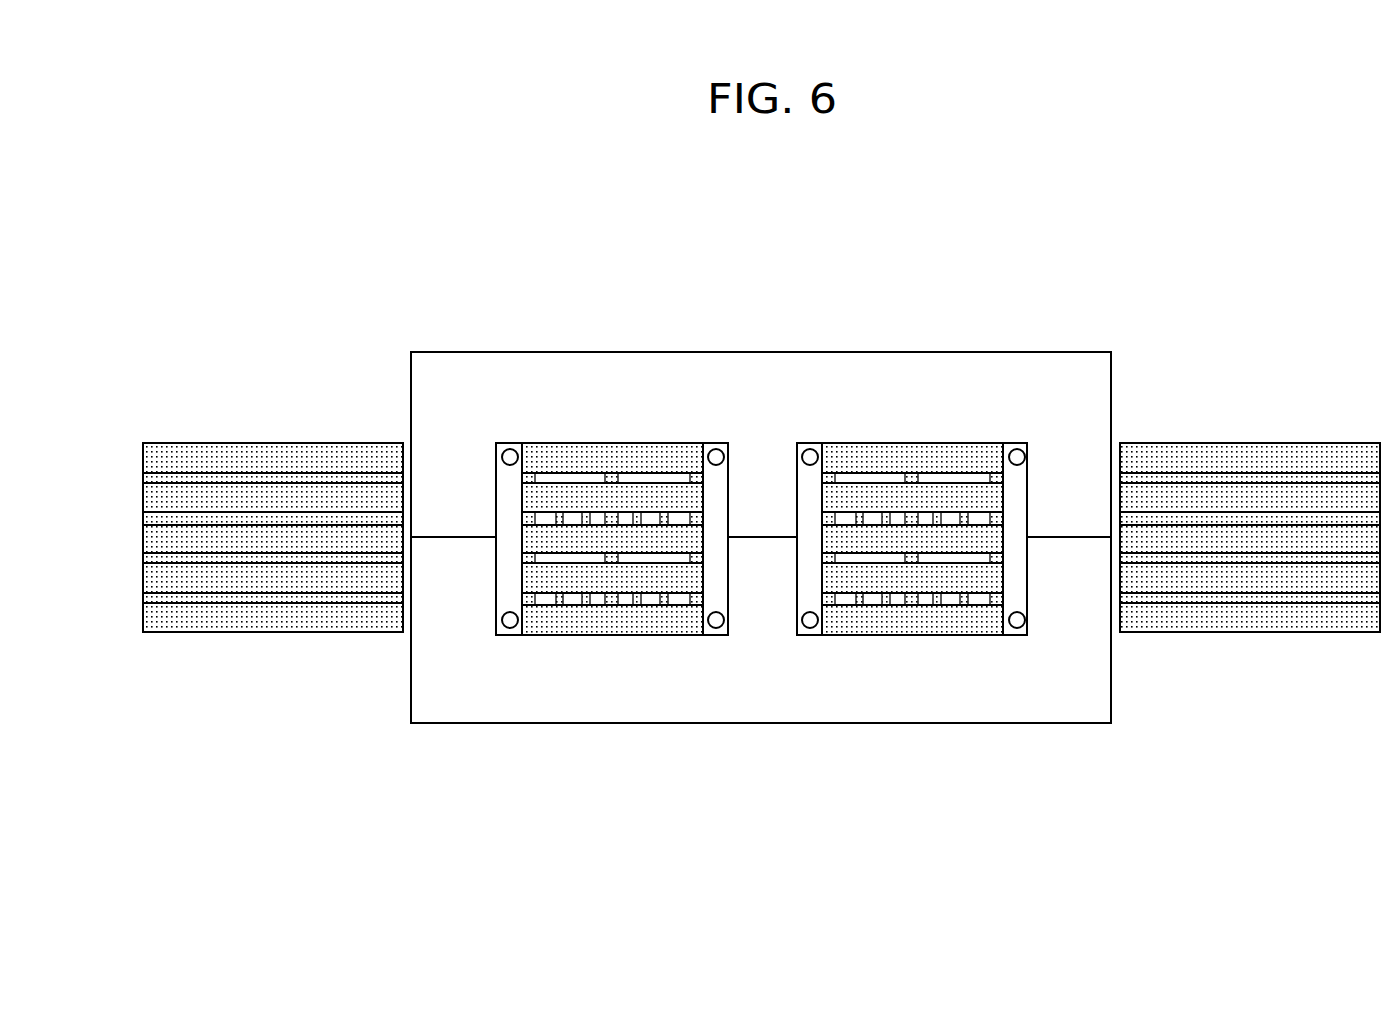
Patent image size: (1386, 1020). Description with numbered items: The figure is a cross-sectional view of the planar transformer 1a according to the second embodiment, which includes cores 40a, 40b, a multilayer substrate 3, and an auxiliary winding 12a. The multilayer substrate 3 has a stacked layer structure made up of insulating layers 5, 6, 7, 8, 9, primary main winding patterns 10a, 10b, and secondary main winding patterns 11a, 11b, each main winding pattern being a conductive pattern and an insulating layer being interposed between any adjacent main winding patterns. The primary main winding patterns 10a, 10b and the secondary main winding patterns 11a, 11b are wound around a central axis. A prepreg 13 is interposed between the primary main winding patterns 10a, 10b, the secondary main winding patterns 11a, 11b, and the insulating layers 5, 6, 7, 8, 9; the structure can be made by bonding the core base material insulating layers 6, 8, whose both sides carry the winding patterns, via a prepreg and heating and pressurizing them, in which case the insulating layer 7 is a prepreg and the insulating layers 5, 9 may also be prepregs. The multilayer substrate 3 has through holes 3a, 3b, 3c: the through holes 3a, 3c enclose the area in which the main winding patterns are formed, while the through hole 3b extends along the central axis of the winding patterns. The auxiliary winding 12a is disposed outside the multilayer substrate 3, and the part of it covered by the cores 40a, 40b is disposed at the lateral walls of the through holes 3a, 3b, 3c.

The planar transformer 1a is at (1302, 232).
The multilayer substrate 3 is at (123, 633).
The through hole 3a is at (404, 438).
The through hole 3b is at (813, 438).
The through hole 3c is at (1119, 438).
The insulating layer 5 is at (1133, 617).
The insulating layer 6 is at (1158, 578).
The insulating layer 7 is at (1238, 537).
The insulating layer 8 is at (1175, 498).
The insulating layer 9 is at (1140, 457).
The primary main winding pattern 10a is at (545, 598).
The primary main winding pattern 10b is at (625, 517).
The secondary main winding pattern 11a is at (590, 558).
The secondary main winding pattern 11b is at (655, 477).
The auxiliary winding 12a is at (510, 443).
The prepreg 13 is at (697, 477).
The core 40a is at (460, 352).
The core 40b is at (437, 726).